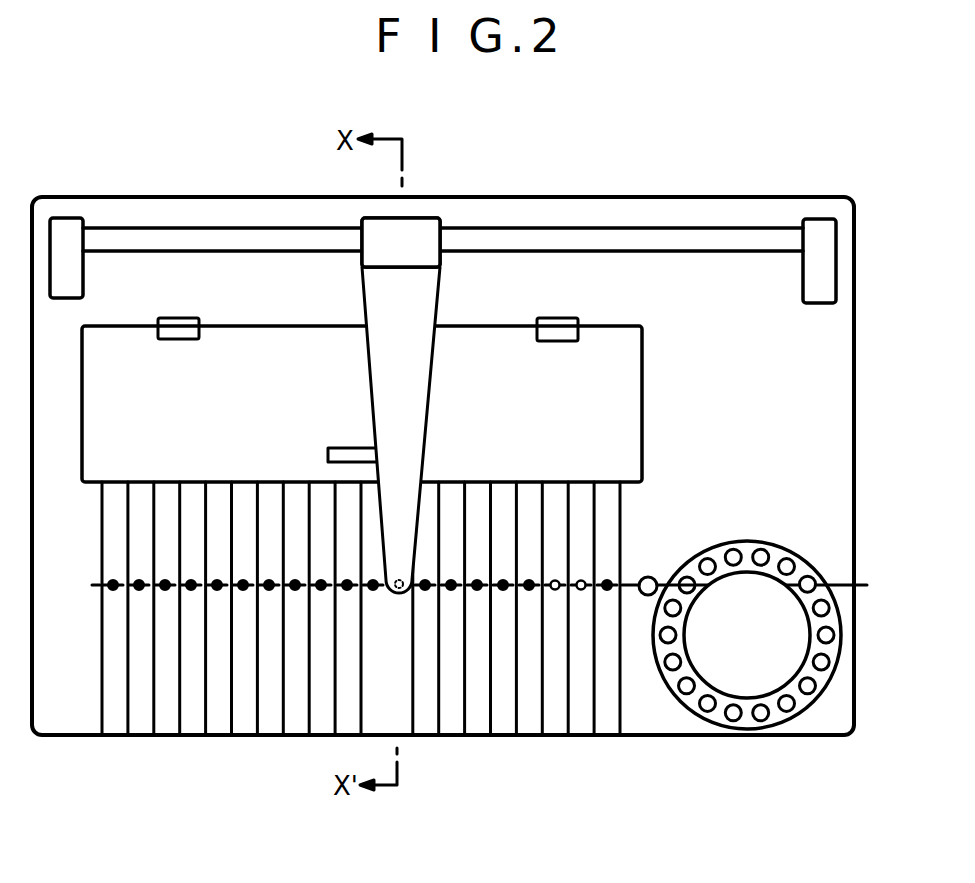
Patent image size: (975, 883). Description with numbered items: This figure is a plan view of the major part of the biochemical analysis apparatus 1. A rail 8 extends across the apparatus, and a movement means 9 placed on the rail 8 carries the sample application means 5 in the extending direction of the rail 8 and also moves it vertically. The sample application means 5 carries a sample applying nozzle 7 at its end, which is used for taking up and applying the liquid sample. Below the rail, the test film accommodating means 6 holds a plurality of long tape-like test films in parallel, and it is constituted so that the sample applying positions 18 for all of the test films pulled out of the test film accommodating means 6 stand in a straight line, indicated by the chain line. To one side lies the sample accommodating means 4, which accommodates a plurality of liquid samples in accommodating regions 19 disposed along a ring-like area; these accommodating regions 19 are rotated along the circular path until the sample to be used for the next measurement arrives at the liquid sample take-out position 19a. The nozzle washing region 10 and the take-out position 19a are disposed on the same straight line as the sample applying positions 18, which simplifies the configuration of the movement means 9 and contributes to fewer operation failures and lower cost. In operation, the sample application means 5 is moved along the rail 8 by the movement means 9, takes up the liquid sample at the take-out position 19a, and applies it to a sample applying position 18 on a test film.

The biochemical analysis apparatus 1 is at (704, 176).
The sample accommodating means 4 is at (803, 566).
The sample application means 5 is at (420, 312).
The test film accommodating means 6 is at (142, 449).
The sample applying nozzle 7 is at (396, 603).
The rail 8 is at (515, 235).
The movement means 9 is at (418, 238).
The nozzle washing region 10 is at (654, 577).
The sample applying positions 18 is at (584, 582).
The accommodating regions 19 is at (833, 632).
The liquid sample take-out position 19a is at (688, 576).